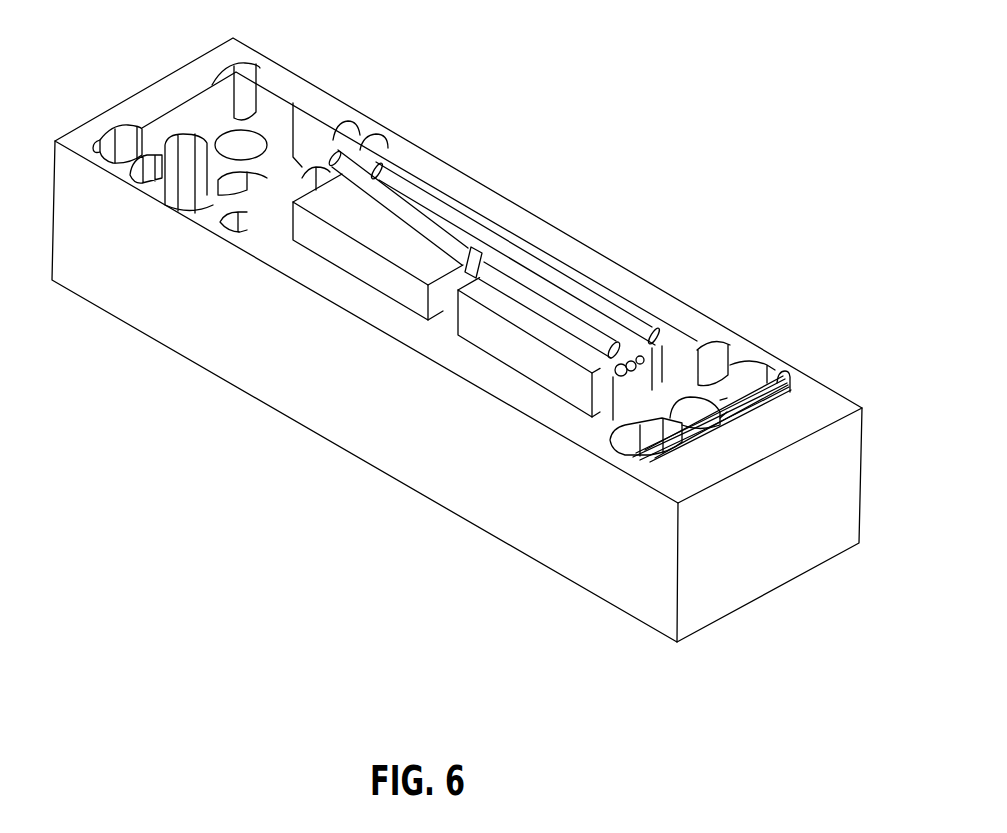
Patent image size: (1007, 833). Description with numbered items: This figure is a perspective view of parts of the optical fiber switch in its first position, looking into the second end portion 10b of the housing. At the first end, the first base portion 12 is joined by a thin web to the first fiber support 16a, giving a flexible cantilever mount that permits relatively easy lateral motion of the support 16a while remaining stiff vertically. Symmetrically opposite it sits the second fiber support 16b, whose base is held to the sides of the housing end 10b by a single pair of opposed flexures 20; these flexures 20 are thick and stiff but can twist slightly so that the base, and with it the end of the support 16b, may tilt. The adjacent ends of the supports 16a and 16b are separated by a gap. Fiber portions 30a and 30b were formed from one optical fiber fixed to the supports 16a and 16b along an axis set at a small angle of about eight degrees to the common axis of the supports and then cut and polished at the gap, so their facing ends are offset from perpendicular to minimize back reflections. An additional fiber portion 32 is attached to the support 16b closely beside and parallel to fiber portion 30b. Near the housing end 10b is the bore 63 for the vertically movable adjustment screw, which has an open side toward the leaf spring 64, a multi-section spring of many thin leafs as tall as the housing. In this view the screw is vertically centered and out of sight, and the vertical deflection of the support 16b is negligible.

The second end portion of the housing 10b is at (780, 522).
The first base portion 12 is at (278, 128).
The first fiber support 16a is at (358, 221).
The second fiber support 16b is at (478, 305).
The flexures 20 is at (635, 413).
The first fiber portion 30a is at (445, 230).
The second fiber portion 30b is at (530, 305).
The additional fiber portion 32 is at (542, 287).
The bore 63 is at (700, 408).
The leaf spring 64 is at (780, 382).